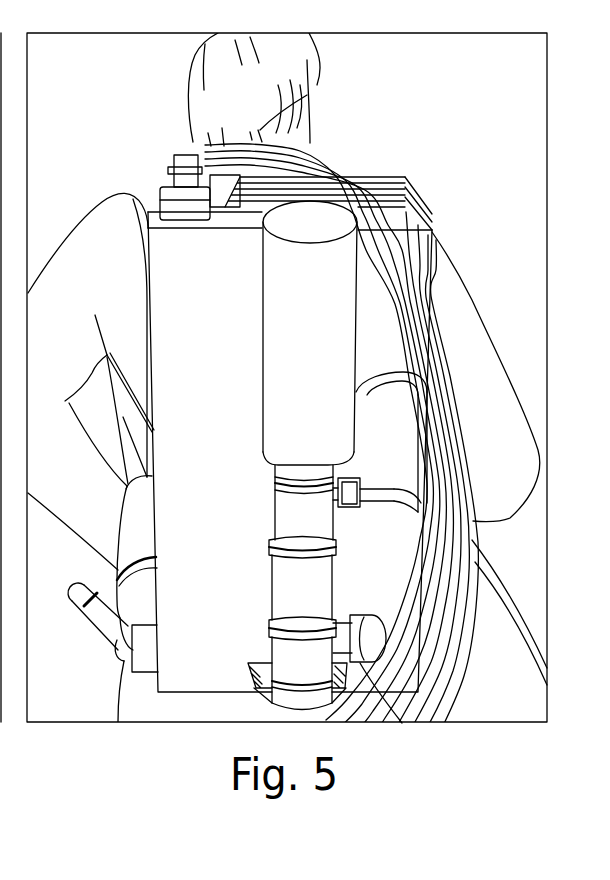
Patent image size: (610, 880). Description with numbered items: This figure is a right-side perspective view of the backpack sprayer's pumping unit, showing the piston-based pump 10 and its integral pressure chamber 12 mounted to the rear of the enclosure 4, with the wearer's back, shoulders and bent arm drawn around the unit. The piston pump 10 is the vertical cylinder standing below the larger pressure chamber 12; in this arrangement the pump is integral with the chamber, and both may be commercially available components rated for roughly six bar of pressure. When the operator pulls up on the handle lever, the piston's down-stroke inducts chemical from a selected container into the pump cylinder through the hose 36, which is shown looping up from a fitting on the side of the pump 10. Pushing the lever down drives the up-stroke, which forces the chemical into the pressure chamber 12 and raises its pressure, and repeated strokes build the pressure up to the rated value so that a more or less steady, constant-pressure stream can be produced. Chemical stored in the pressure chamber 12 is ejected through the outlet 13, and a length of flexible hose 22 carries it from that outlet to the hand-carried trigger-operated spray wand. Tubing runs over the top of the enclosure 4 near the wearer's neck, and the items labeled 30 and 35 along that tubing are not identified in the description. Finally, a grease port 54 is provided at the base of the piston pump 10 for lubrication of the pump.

The enclosure 4 is at (210, 436).
The piston-based pump 10 is at (272, 562).
The integral pressure chamber 12 is at (262, 316).
The outlet 13 is at (349, 509).
The flexible hose 22 is at (522, 602).
The tubing 30 is at (194, 149).
The tubing 35 is at (325, 162).
The hose 36 is at (373, 388).
The grease port 54 is at (402, 723).